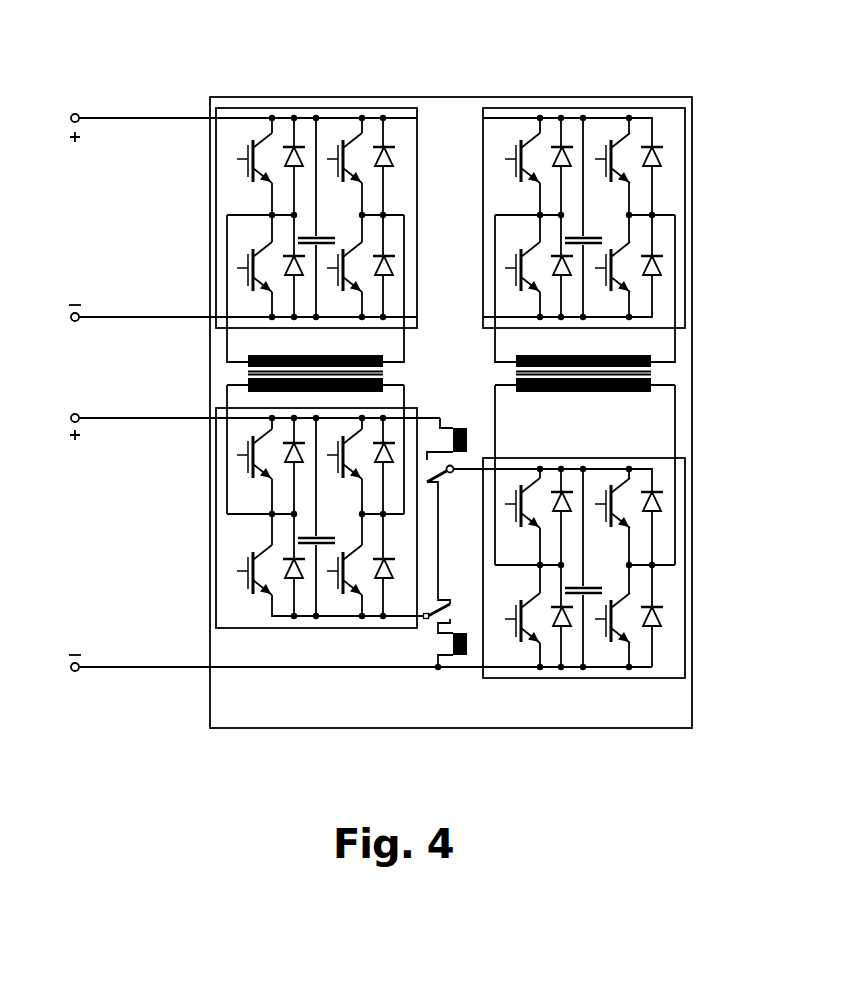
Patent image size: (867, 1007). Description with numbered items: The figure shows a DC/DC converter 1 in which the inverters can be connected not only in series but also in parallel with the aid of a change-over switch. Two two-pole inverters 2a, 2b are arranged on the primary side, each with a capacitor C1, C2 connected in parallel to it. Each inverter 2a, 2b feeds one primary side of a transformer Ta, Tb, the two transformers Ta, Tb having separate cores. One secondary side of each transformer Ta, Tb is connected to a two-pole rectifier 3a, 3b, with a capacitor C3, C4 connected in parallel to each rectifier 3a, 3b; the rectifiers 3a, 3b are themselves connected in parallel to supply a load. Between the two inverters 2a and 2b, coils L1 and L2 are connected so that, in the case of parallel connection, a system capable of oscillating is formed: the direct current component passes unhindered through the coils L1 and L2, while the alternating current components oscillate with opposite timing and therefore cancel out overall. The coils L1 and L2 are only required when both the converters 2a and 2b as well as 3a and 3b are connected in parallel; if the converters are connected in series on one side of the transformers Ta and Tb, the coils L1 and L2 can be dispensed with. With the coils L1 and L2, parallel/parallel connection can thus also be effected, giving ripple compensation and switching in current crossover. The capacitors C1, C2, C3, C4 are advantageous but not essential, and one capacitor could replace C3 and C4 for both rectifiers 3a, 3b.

The DC/DC converter 1 is at (378, 712).
The two-pole inverter 2a is at (299, 591).
The two-pole inverter 2b is at (569, 616).
The two-pole rectifier 3a is at (316, 205).
The two-pole rectifier 3b is at (584, 205).
The transformer Ta is at (222, 372).
The transformer Tb is at (682, 368).
The coil L1 is at (448, 495).
The coil L2 is at (458, 657).
The capacitor C1 is at (324, 517).
The capacitor C2 is at (592, 568).
The capacitor C3 is at (324, 217).
The capacitor C4 is at (592, 217).